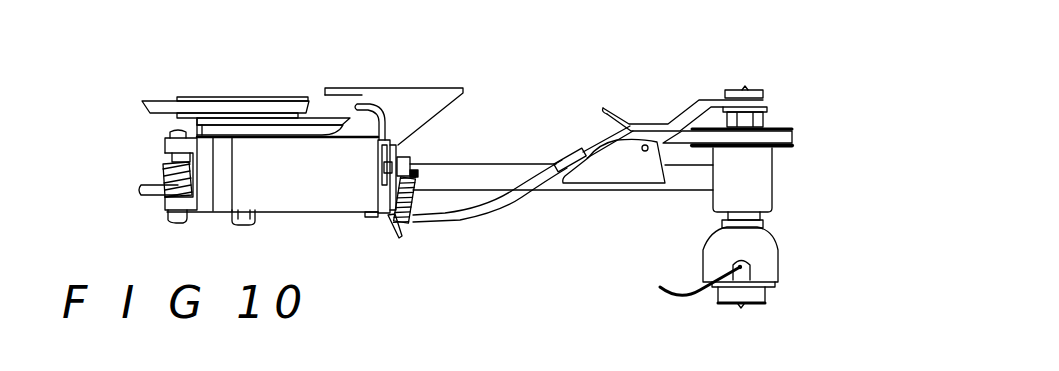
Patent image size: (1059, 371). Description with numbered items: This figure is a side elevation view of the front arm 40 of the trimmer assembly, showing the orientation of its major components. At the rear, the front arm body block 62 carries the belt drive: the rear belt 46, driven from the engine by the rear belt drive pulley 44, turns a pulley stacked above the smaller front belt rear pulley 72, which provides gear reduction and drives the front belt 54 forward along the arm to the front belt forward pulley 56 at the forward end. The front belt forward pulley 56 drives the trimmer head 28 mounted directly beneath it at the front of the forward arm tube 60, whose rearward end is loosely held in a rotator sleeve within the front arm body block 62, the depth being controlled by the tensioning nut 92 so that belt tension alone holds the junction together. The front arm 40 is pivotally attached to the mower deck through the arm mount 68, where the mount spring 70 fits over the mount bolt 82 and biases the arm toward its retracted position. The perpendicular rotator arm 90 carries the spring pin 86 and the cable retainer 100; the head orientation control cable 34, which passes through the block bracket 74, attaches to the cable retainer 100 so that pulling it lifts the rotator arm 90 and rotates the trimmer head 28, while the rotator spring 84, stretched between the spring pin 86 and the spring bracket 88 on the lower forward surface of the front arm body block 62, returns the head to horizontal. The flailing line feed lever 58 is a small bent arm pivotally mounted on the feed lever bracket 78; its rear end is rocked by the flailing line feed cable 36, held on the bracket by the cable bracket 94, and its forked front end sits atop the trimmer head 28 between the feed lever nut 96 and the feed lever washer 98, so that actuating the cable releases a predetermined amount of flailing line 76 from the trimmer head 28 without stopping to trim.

The trimmer head 28 is at (785, 267).
The head orientation control cable 34 is at (377, 115).
The flailing line feed cable 36 is at (493, 208).
The front arm 40 is at (608, 246).
The rear belt drive pulley 44 is at (223, 95).
The rear belt 46 is at (165, 103).
The front belt 54 is at (313, 123).
The front belt forward pulley 56 is at (795, 148).
The flailing line feed lever 58 is at (692, 102).
The forward arm tube 60 is at (693, 182).
The front arm body block 62 is at (257, 173).
The arm mount 68 is at (147, 143).
The mount spring 70 is at (160, 168).
The front belt rear pulley 72 is at (270, 115).
The block bracket 74 is at (425, 97).
The flailing line 76 is at (700, 298).
The feed lever bracket 78 is at (632, 172).
The mount bolt 82 is at (168, 217).
The rotator spring 84 is at (410, 222).
The spring pin 86 is at (412, 173).
The spring bracket 88 is at (398, 230).
The rotator arm 90 is at (395, 148).
The tensioning nut 92 is at (410, 157).
The cable bracket 94 is at (577, 145).
The feed lever nut 96 is at (768, 117).
The feed lever washer 98 is at (770, 90).
The cable retainer 100 is at (378, 182).